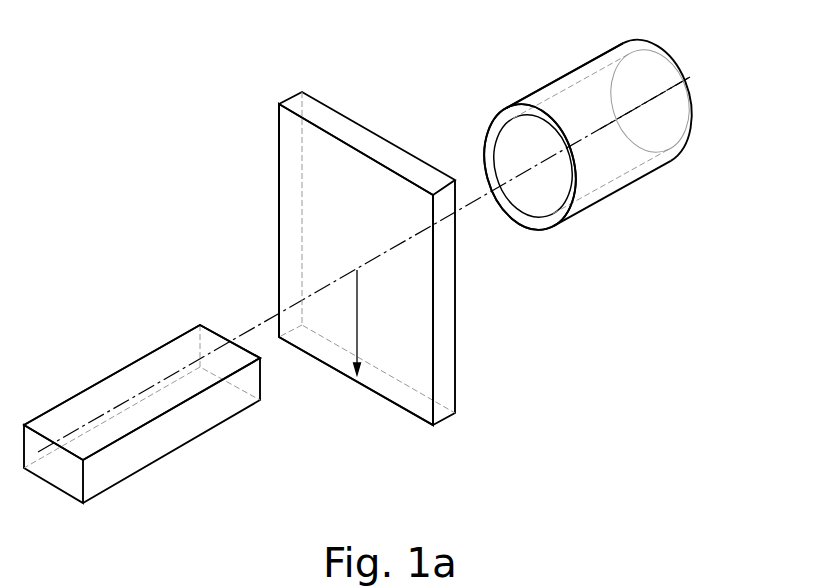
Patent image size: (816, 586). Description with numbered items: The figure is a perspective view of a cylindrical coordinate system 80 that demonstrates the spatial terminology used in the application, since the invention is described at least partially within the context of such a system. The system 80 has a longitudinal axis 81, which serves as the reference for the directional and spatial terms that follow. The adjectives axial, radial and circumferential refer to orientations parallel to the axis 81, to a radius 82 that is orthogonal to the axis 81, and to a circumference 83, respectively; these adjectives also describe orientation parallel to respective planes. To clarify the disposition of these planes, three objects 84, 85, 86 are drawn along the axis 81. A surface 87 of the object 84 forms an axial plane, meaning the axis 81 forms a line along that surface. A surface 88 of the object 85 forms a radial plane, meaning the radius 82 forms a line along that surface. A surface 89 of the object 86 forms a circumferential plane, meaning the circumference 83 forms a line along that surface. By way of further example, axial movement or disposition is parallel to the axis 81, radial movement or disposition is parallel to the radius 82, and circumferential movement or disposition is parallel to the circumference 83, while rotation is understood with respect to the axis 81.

The cylindrical coordinate system 80 is at (230, 136).
The longitudinal axis 81 is at (678, 80).
The radius 82 is at (357, 317).
The circumference 83 is at (480, 133).
The object 84 is at (108, 492).
The object 85 is at (471, 417).
The object 86 is at (624, 210).
The surface 87 is at (103, 395).
The surface 88 is at (293, 217).
The surface 89 is at (555, 72).